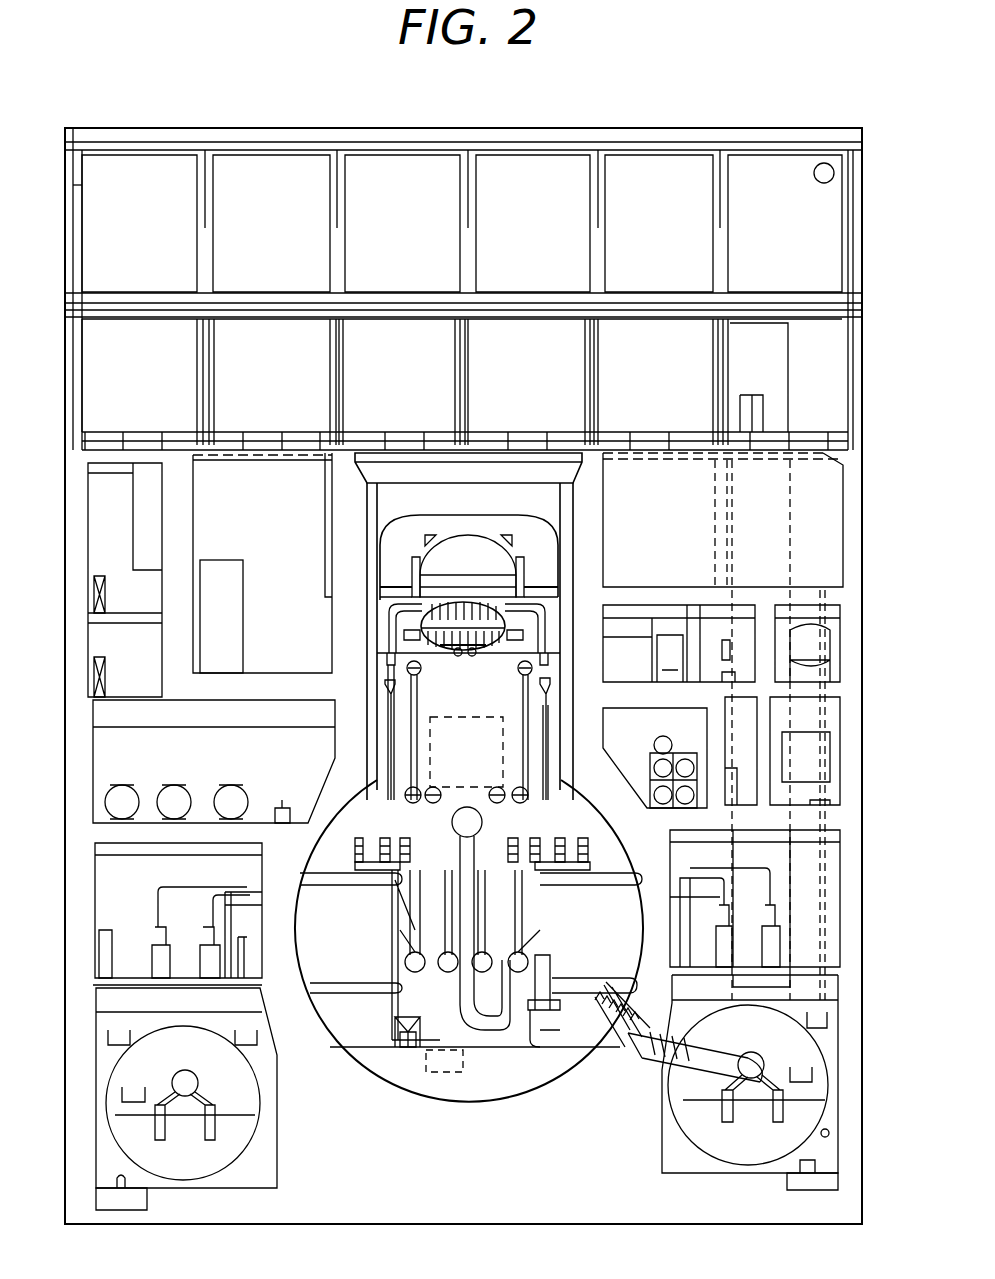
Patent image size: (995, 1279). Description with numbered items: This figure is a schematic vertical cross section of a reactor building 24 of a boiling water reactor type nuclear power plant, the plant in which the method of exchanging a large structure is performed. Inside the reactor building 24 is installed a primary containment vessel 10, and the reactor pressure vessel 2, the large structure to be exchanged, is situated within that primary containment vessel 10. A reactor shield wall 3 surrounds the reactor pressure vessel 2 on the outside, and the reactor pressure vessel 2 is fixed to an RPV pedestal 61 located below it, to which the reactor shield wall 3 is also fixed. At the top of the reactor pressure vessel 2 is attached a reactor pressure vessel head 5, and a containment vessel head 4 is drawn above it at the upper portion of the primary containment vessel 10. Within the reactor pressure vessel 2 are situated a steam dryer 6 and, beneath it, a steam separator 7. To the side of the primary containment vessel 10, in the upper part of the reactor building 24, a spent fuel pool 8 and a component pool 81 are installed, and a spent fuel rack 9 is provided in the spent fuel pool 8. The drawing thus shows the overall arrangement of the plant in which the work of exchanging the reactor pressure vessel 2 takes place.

The reactor building 24 is at (858, 240).
The spent fuel pool 8 is at (275, 478).
The component pool 81 is at (631, 472).
The spent fuel rack 9 is at (226, 580).
The containment vessel head 4 is at (460, 512).
The reactor pressure vessel head 5 is at (452, 550).
The steam dryer 6 is at (497, 622).
The reactor pressure vessel 2 is at (507, 647).
The steam separator 7 is at (450, 655).
The reactor shield wall 3 is at (507, 688).
The primary containment vessel 10 is at (562, 792).
The RPV pedestal 61 is at (417, 998).